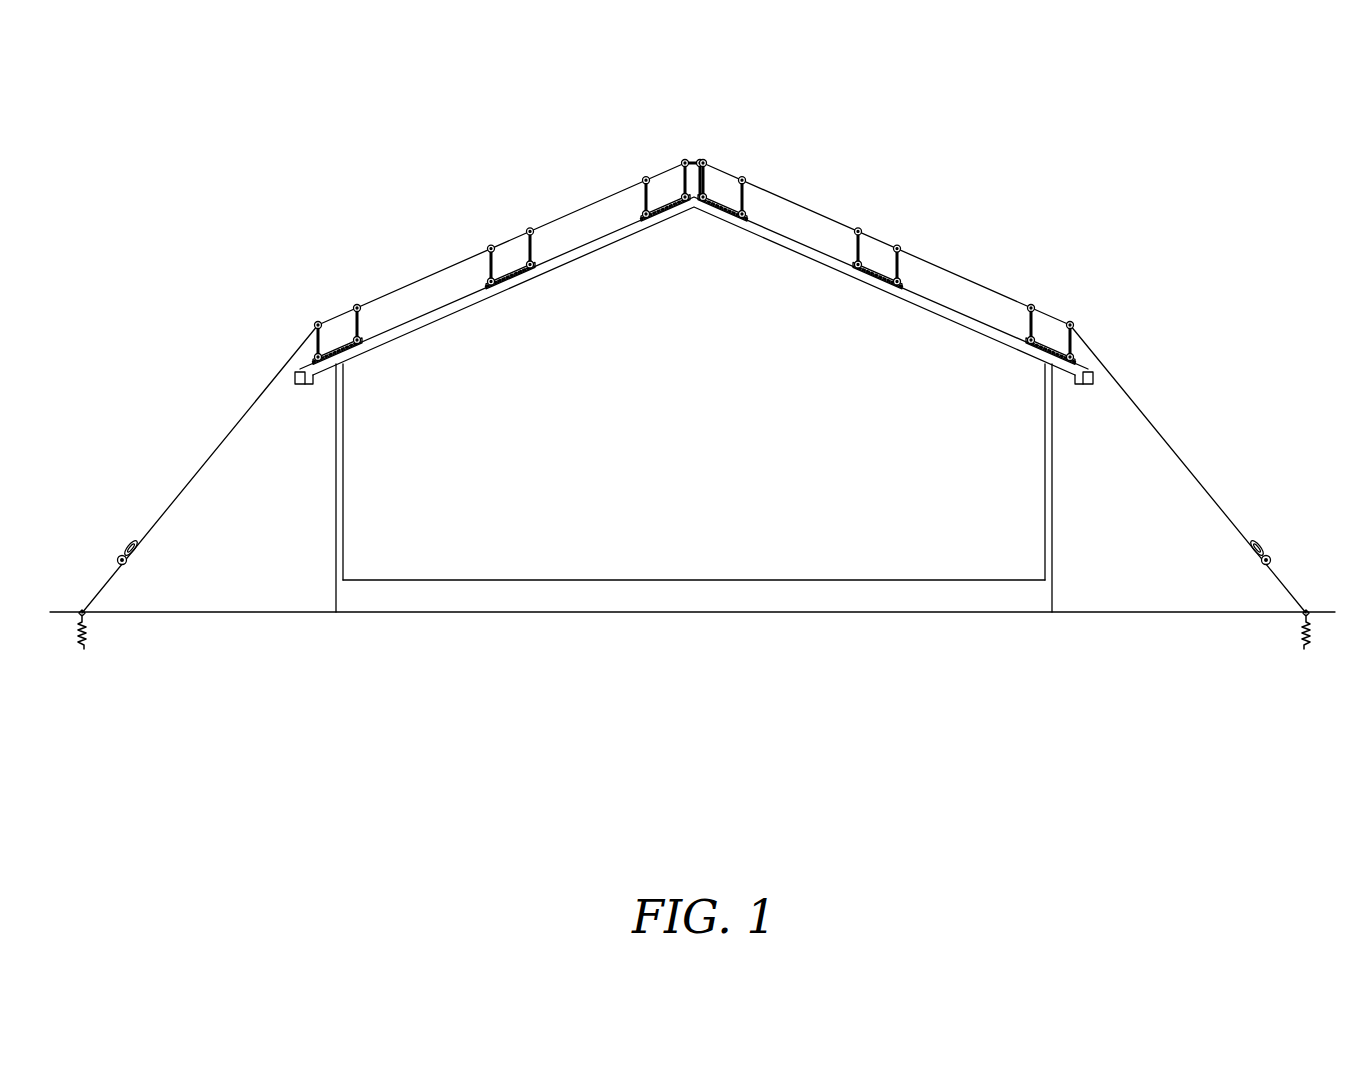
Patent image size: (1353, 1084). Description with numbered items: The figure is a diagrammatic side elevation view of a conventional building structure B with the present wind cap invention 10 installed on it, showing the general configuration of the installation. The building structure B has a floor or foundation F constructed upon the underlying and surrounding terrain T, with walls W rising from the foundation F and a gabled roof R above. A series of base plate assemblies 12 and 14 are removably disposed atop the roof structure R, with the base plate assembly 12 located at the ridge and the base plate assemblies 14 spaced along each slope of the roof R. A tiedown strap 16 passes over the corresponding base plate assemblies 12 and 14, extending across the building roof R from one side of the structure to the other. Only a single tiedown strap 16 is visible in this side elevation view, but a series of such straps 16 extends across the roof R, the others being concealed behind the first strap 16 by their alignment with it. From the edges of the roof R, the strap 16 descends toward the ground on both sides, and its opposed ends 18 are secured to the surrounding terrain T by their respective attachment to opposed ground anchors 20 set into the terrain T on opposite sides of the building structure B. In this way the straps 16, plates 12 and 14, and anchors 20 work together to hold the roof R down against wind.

The wind cap invention 10 is at (372, 113).
The base plate assembly 12 is at (686, 138).
The base plate assembly 14 is at (476, 230).
The tiedown strap 16 is at (588, 202).
The opposed ends of the strap 18 is at (104, 582).
The ground anchor 20 is at (86, 627).
The roof R is at (804, 260).
The walls W is at (344, 446).
The floor or foundation F is at (814, 578).
The terrain T is at (192, 610).
The building structure B is at (692, 471).